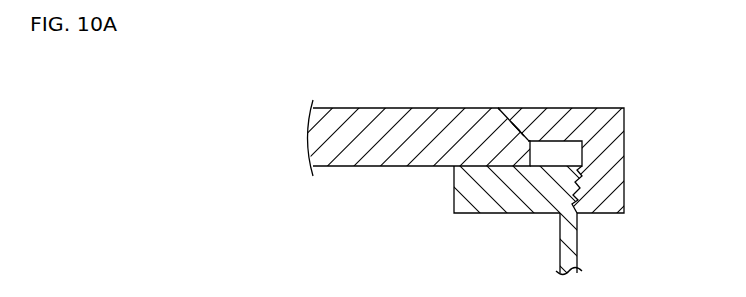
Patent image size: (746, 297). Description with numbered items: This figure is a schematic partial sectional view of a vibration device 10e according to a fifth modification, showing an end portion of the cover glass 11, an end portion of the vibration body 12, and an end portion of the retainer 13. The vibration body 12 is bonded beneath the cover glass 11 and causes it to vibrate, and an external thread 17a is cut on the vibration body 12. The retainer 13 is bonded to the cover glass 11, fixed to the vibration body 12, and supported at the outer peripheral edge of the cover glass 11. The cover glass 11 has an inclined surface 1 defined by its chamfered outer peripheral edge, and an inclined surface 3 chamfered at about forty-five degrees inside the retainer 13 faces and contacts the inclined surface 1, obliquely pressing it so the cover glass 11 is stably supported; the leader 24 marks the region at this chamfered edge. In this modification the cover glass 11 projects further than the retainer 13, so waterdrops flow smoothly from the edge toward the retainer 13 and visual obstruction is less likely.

The vibration device 10e is at (665, 56).
The cover glass 11 is at (398, 108).
The retainer 13 is at (612, 154).
The vibration body 12 is at (485, 201).
The external thread 17a is at (590, 194).
The corner edge 24 is at (503, 102).
The inclined surface 3 is at (513, 129).
The inclined surface 1 is at (536, 123).